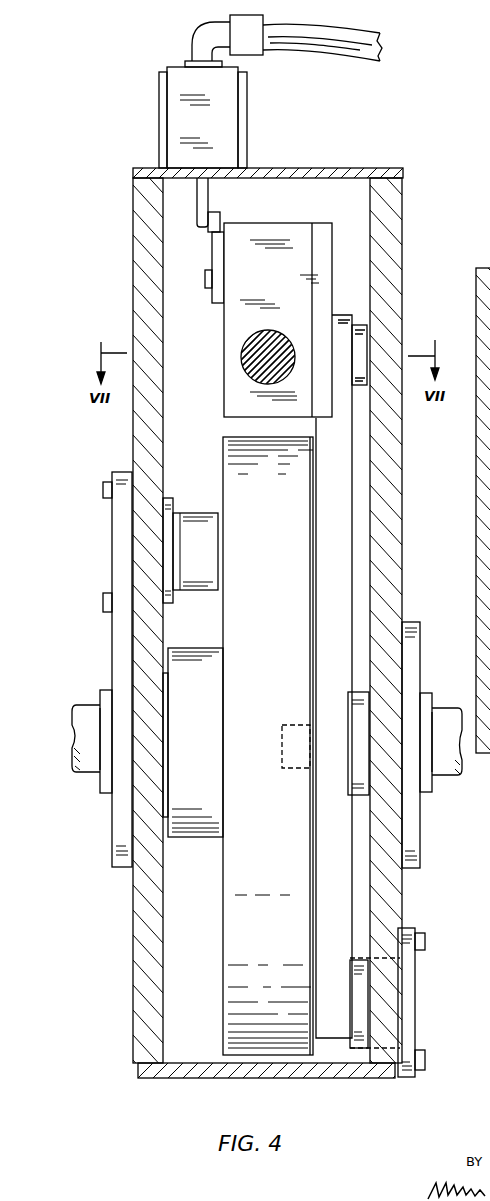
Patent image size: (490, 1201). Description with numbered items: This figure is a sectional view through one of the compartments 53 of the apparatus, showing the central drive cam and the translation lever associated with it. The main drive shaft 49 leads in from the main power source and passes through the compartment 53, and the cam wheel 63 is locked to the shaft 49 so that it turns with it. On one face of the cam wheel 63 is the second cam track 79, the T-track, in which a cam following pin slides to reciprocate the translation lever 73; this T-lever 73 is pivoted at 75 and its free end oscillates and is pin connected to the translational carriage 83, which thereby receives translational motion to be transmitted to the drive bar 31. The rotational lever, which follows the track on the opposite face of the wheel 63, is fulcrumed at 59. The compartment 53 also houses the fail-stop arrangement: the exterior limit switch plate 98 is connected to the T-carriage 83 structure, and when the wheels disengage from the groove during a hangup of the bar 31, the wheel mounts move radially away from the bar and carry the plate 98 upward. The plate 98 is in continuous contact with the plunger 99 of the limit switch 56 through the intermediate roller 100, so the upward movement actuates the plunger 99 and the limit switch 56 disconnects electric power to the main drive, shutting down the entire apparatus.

The compartment 53 is at (357, 168).
The limit switch 56 is at (212, 118).
The plunger 99 is at (201, 190).
The intermediate roller 100 is at (217, 213).
The limit switch plate 98 is at (213, 242).
The translational carriage 83 is at (255, 223).
The drive bar 31 is at (262, 335).
The translation lever 73 is at (341, 676).
The cam wheel 63 is at (268, 746).
The second cam track 79 is at (282, 766).
The fulcrum 59 is at (185, 513).
The main drive shaft 49 is at (80, 726).
The pivot 75 is at (350, 993).